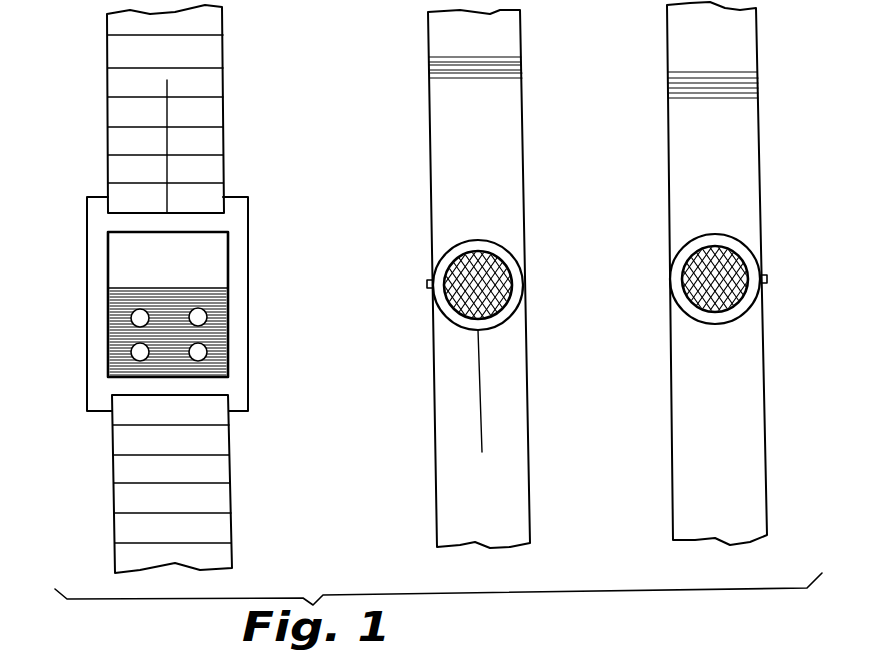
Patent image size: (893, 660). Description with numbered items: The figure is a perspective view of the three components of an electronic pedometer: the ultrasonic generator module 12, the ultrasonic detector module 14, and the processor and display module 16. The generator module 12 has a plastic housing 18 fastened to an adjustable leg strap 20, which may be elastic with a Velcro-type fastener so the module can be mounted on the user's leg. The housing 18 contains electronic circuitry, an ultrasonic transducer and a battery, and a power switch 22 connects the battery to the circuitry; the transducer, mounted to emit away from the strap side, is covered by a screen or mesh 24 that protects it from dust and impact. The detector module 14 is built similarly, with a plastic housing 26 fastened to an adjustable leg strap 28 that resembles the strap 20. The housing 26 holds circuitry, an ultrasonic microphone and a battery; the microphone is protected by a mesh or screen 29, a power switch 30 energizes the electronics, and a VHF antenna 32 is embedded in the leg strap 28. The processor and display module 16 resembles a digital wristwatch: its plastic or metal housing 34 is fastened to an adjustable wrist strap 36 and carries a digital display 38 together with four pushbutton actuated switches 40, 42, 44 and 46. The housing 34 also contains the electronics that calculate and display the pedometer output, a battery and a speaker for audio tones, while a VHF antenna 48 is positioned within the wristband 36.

The ultrasonic generator module 12 is at (772, 237).
The ultrasonic detector module 14 is at (535, 237).
The processor and display module 16 is at (262, 202).
The housing 18 is at (760, 255).
The adjustable leg strap 20 is at (757, 72).
The power switch 22 is at (767, 280).
The screen or mesh 24 is at (688, 297).
The housing 26 is at (523, 262).
The adjustable leg strap 28 is at (522, 82).
The mesh or screen 29 is at (508, 295).
The power switch 30 is at (427, 283).
The VHF antenna 32 is at (483, 427).
The housing 34 is at (248, 252).
The adjustable wrist strap 36 is at (230, 475).
The digital display 38 is at (117, 267).
The pushbutton actuated switch 40 is at (110, 318).
The pushbutton actuated switch 42 is at (117, 355).
The pushbutton actuated switch 44 is at (207, 307).
The pushbutton actuated switch 46 is at (213, 345).
The VHF antenna 48 is at (169, 86).